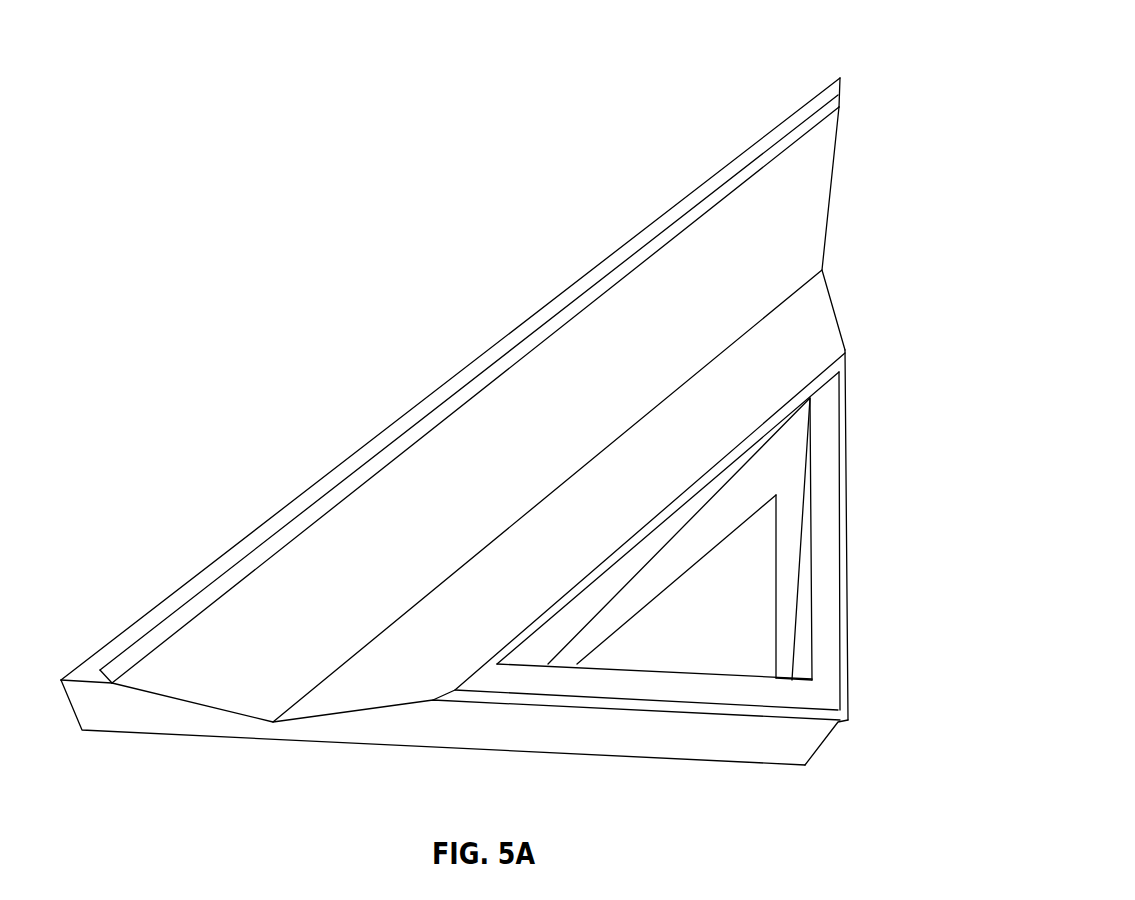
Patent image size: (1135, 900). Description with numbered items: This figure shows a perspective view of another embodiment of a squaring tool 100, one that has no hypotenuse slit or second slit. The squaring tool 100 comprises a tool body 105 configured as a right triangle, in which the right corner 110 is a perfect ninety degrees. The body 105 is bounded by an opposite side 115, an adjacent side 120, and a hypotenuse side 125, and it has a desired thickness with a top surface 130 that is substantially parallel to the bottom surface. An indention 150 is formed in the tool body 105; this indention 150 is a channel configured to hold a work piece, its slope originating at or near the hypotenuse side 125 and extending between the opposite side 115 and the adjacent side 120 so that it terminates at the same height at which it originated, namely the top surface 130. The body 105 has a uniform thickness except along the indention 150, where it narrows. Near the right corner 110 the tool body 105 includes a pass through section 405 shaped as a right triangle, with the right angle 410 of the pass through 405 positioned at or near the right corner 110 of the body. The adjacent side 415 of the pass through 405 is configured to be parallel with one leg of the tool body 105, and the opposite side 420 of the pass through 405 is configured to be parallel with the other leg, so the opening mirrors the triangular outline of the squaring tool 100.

The squaring tool 100 is at (597, 152).
The tool body 105 is at (316, 447).
The right corner 110 is at (838, 735).
The opposite side 115 is at (440, 727).
The adjacent side 120 is at (870, 550).
The hypotenuse side 125 is at (799, 104).
The top surface 130 is at (821, 418).
The indention 150 is at (803, 242).
The pass through section 405 is at (752, 636).
The right angle of the pass through 410 is at (783, 675).
The adjacent side of the pass through 415 is at (642, 675).
The opposite side of the pass through 420 is at (783, 535).